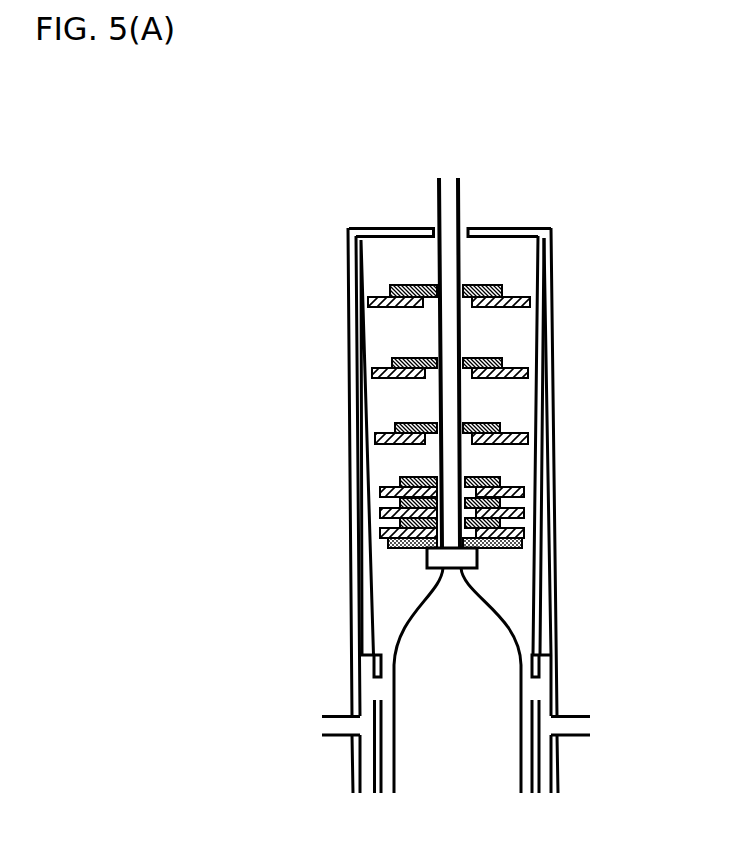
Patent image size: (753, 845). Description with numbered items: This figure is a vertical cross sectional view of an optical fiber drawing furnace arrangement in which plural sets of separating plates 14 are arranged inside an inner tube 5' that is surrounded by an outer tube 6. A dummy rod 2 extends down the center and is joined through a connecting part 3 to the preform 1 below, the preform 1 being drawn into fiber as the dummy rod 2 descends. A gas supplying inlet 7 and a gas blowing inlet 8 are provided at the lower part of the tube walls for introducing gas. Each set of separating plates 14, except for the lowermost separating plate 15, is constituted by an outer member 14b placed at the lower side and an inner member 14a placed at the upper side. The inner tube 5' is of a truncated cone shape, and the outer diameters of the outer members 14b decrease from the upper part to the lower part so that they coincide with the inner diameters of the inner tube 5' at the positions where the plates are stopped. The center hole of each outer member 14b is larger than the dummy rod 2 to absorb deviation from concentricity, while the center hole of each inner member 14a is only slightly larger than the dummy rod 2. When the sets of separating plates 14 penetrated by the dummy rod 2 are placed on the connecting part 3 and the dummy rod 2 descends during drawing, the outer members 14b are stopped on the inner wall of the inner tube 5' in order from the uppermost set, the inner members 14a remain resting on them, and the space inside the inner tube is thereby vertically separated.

The preform 1 is at (472, 713).
The dummy rod 2 is at (448, 220).
The connecting part 3 is at (462, 560).
The inner tube 5' is at (473, 456).
The outer tube 6 is at (350, 560).
The gas supplying inlet 7 is at (333, 727).
The gas blowing inlet 8 is at (376, 690).
The set of separating plates 14 is at (468, 389).
The inner member 14a is at (482, 287).
The outer member 14b is at (503, 302).
The lowermost separating plate 15 is at (498, 548).